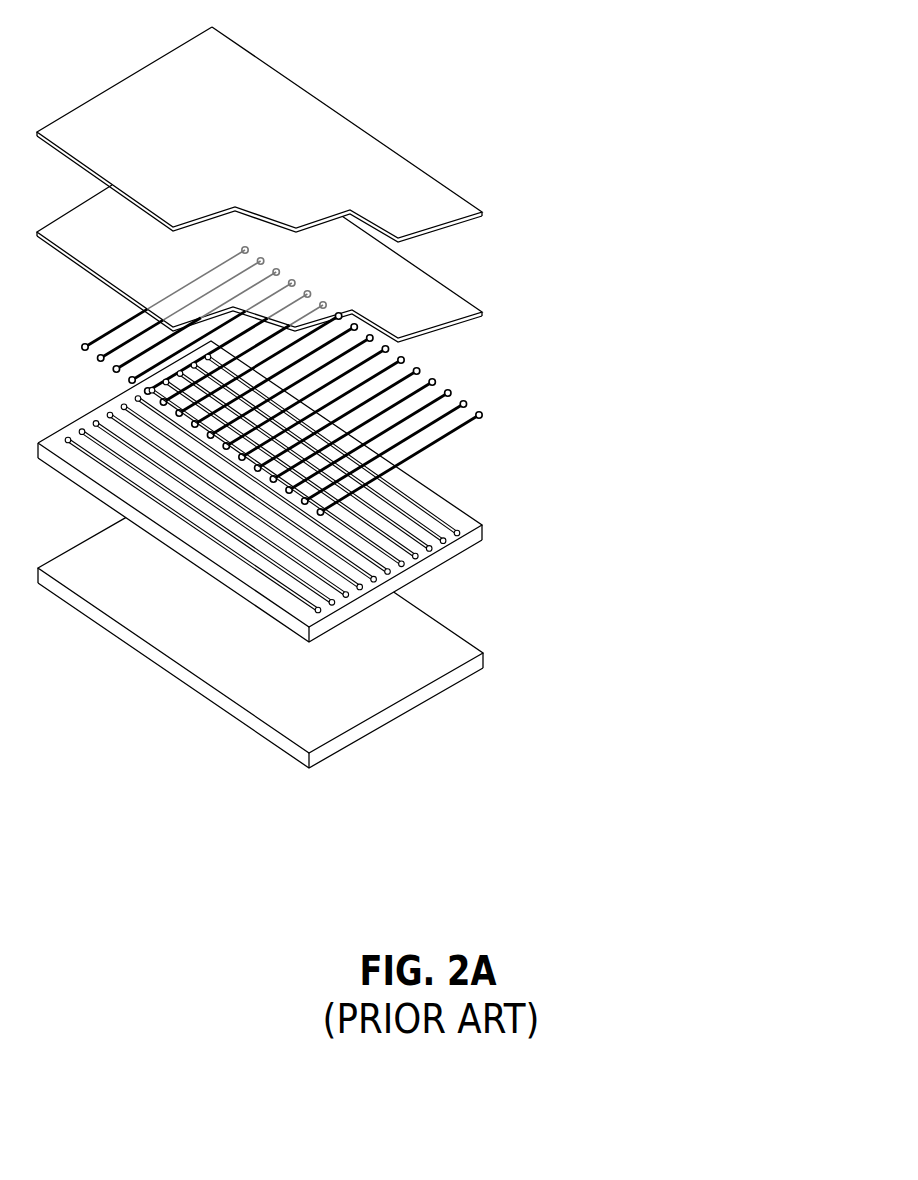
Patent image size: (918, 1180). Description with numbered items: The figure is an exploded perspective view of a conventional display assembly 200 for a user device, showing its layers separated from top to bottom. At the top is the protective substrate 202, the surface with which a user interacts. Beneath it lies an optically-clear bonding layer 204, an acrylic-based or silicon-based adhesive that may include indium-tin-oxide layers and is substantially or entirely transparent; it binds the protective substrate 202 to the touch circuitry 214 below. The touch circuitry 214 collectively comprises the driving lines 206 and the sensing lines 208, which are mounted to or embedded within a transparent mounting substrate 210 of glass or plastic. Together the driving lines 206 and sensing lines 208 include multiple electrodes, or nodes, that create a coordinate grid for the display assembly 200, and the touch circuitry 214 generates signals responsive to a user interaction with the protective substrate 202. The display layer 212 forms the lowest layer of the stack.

The display assembly 200 is at (67, 27).
The protective substrate 202 is at (487, 217).
The optically-clear bonding layer 204 is at (487, 317).
The driving lines 206 is at (488, 418).
The sensing lines 208 is at (460, 523).
The mounting substrate 210 is at (488, 540).
The display layer 212 is at (487, 663).
The touch circuitry 214 is at (433, 444).